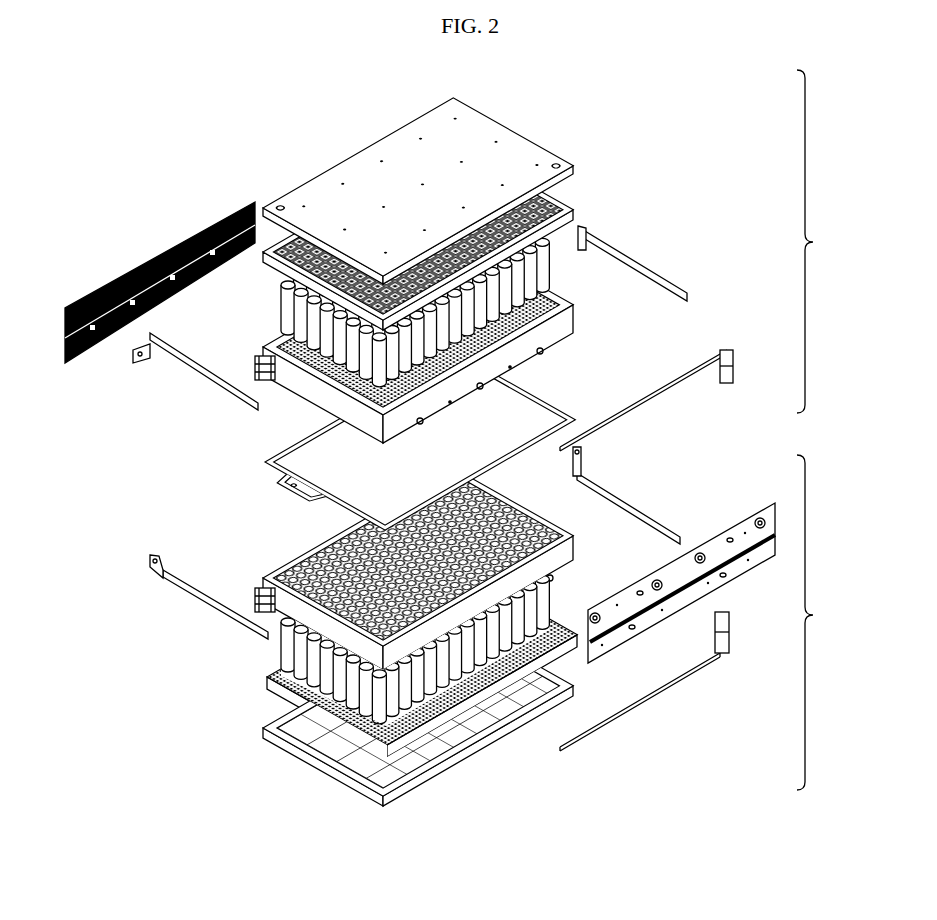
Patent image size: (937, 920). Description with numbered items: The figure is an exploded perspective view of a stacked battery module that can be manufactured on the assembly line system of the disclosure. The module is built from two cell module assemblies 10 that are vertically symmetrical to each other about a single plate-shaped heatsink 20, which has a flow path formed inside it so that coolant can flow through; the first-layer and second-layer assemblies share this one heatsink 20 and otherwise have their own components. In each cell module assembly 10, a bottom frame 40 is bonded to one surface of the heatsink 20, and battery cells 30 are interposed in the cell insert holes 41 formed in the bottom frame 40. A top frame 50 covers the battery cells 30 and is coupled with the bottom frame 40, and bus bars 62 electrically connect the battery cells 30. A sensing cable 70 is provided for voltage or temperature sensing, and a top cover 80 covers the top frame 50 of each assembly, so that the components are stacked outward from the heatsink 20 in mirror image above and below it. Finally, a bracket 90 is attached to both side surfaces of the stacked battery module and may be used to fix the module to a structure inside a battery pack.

The cell module assembly 10 is at (835, 430).
The heatsink 20 is at (300, 452).
The battery cells 30 is at (278, 655).
The bottom frame 40 is at (262, 580).
The cell insert holes 41 is at (290, 578).
The top frame 50 is at (263, 690).
The bus bar 62 is at (202, 370).
The sensing cable 70 is at (660, 386).
The top cover 80 is at (333, 773).
The bracket 90 is at (153, 256).